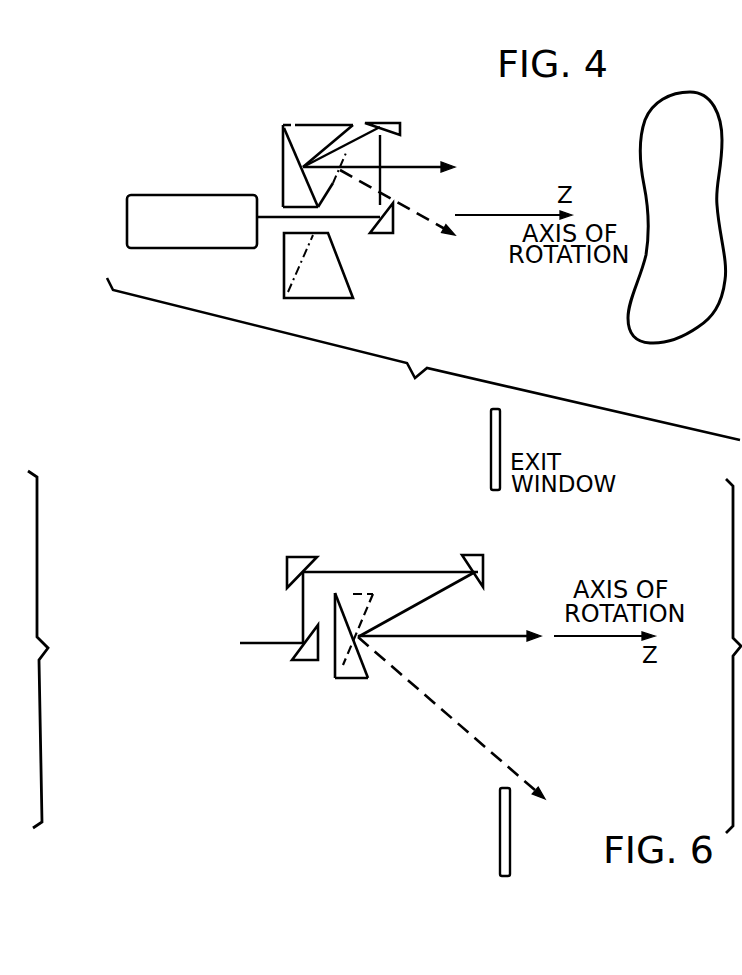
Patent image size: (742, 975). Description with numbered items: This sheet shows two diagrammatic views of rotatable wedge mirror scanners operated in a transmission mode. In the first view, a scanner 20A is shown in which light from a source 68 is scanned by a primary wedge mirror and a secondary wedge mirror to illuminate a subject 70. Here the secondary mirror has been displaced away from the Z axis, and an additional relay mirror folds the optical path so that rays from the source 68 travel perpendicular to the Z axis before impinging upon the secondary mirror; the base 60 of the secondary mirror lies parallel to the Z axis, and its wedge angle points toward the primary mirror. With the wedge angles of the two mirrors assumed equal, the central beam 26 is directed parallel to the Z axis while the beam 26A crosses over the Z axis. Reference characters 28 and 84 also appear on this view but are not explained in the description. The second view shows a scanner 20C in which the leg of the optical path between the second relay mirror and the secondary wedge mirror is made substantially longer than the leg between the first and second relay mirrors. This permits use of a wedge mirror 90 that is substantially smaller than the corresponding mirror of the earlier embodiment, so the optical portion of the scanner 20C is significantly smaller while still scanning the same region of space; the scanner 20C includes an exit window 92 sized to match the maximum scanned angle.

In FIG. 4, the scanner 20A is at (310, 118).
In FIG. 4, the base of the mirror M2 60 is at (385, 120).
In FIG. 4, the beam 26 is at (407, 165).
In FIG. 6, the beam 26 is at (430, 636).
In FIG. 4, the source 68 is at (212, 195).
In FIG. 4, the prism M1 / input beam path 28 is at (283, 232).
In FIG. 4, the reflector R 84 is at (384, 236).
In FIG. 4, the beam 26A is at (433, 223).
In FIG. 6, the beam 26A is at (432, 699).
In FIG. 4, the subject 70 is at (662, 325).
In FIG. 6, the scanner 20C is at (399, 509).
In FIG. 6, the wedge mirror 90 is at (340, 682).
In FIG. 6, the exit window 92 is at (511, 845).